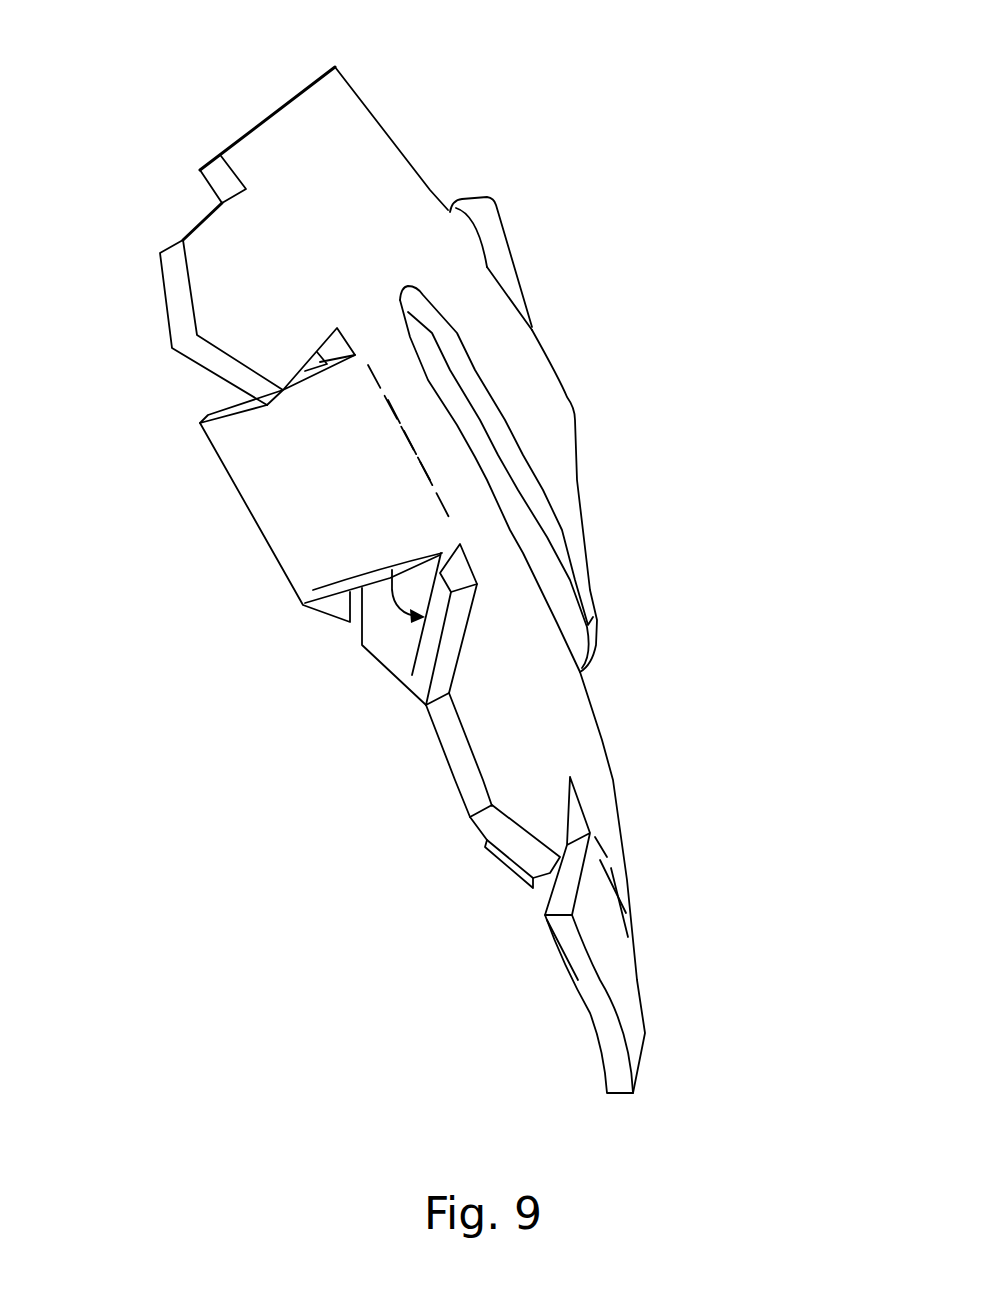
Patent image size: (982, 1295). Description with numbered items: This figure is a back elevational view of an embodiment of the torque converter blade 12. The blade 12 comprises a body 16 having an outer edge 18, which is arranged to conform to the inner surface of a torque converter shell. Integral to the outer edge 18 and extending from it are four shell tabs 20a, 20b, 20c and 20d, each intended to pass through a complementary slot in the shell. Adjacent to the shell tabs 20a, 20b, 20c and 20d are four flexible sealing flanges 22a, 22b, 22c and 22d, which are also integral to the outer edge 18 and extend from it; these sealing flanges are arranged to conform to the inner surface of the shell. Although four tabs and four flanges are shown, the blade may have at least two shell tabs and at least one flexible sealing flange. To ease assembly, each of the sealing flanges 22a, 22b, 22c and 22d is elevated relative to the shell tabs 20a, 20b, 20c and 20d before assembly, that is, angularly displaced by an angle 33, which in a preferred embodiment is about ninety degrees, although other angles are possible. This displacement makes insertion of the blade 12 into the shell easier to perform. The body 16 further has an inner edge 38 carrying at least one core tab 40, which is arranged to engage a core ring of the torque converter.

The torque converter blade 12 is at (713, 208).
The body 16 is at (407, 223).
The outer edge 18 is at (217, 177).
The inner edge 38 is at (378, 117).
The core tab 40 is at (487, 210).
The shell tab 20d is at (215, 323).
The flexible sealing flange 22d is at (290, 493).
The shell tab 20a is at (327, 617).
The angle 33 is at (388, 610).
The flexible sealing flange 22a is at (402, 673).
The shell tab 20c is at (484, 838).
The shell tab 20b is at (510, 862).
The flexible sealing flange 22b is at (542, 892).
The flexible sealing flange 22c is at (612, 968).